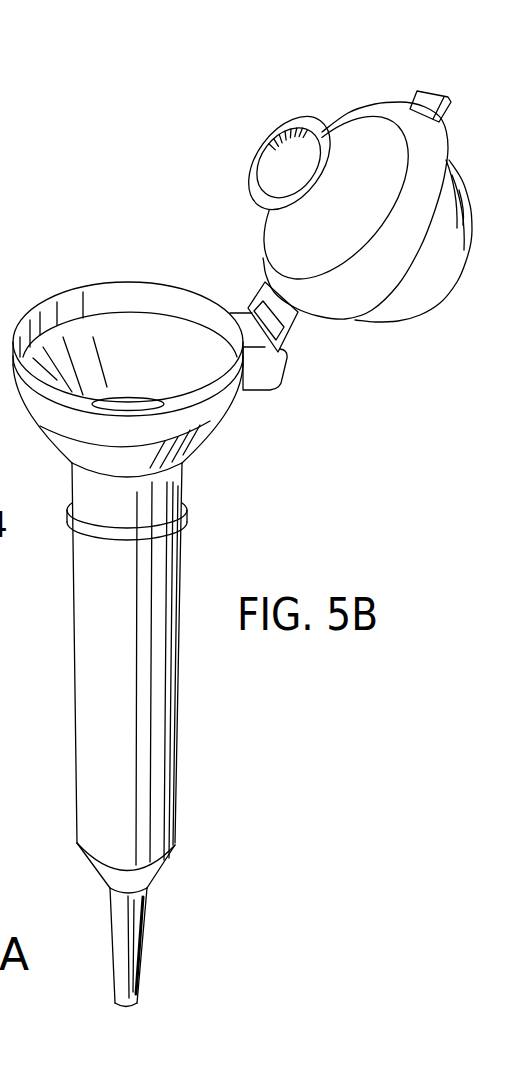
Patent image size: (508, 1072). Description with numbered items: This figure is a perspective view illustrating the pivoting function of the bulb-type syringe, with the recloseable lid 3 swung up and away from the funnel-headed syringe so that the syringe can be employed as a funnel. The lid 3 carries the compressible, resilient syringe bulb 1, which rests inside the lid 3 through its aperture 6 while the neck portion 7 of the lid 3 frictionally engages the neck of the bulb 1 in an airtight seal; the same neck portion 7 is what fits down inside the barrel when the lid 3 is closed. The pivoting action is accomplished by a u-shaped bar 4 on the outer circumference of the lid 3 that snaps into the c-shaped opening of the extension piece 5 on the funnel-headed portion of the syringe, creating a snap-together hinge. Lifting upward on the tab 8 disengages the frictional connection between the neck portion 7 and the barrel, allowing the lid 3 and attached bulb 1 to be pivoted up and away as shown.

The syringe bulb 1 is at (428, 301).
The recloseable lid 3 is at (363, 108).
The "u" shaped bar 4 is at (299, 316).
The extension piece 5 is at (282, 378).
The aperture 6 is at (270, 243).
The neck portion 7 is at (327, 135).
The tab 8 is at (430, 93).